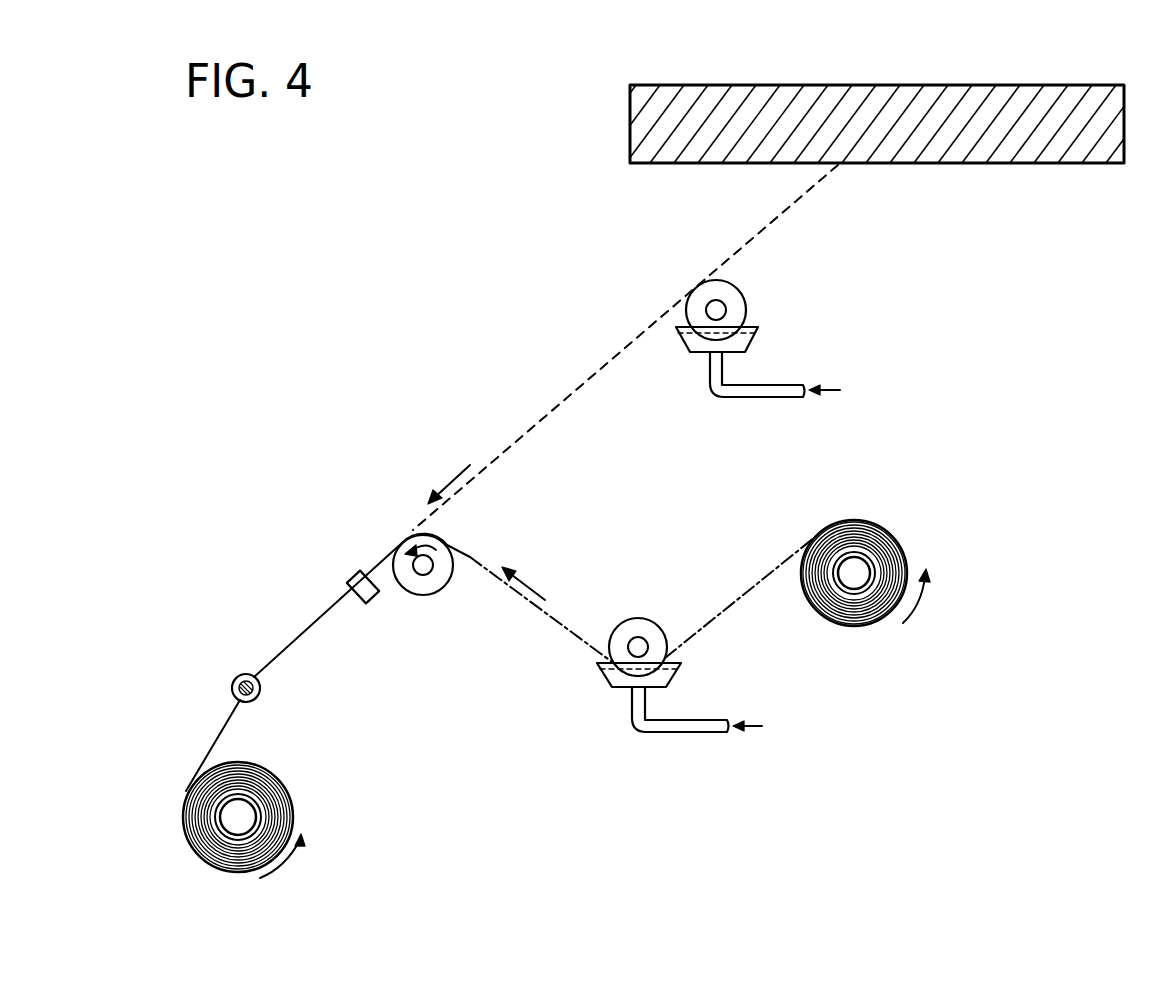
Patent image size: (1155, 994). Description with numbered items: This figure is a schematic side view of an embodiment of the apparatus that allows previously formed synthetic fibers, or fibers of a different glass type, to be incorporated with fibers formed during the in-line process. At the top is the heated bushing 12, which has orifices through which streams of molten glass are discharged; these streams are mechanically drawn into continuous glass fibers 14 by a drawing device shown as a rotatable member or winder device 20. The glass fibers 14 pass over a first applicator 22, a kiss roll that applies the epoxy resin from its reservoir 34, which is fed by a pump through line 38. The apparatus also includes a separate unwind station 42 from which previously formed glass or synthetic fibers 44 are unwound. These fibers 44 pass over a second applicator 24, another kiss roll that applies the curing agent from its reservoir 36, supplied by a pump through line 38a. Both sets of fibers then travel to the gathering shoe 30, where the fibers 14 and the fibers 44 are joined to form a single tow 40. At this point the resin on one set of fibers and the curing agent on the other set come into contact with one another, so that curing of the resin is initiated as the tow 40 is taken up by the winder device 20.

The heated bushing 12 is at (1005, 95).
The glass fibers 14 is at (753, 240).
The winder device 20 is at (293, 786).
The first applicator 22 is at (740, 298).
The second applicator 24 is at (645, 623).
The gathering shoe 30 is at (355, 577).
The reservoir 34 is at (683, 340).
The reservoir 36 is at (602, 676).
The line 38 is at (758, 392).
The line 38a is at (680, 731).
The single tow 40 is at (288, 642).
The separate unwind station 42 is at (905, 524).
The previously formed fibers 44 is at (727, 617).